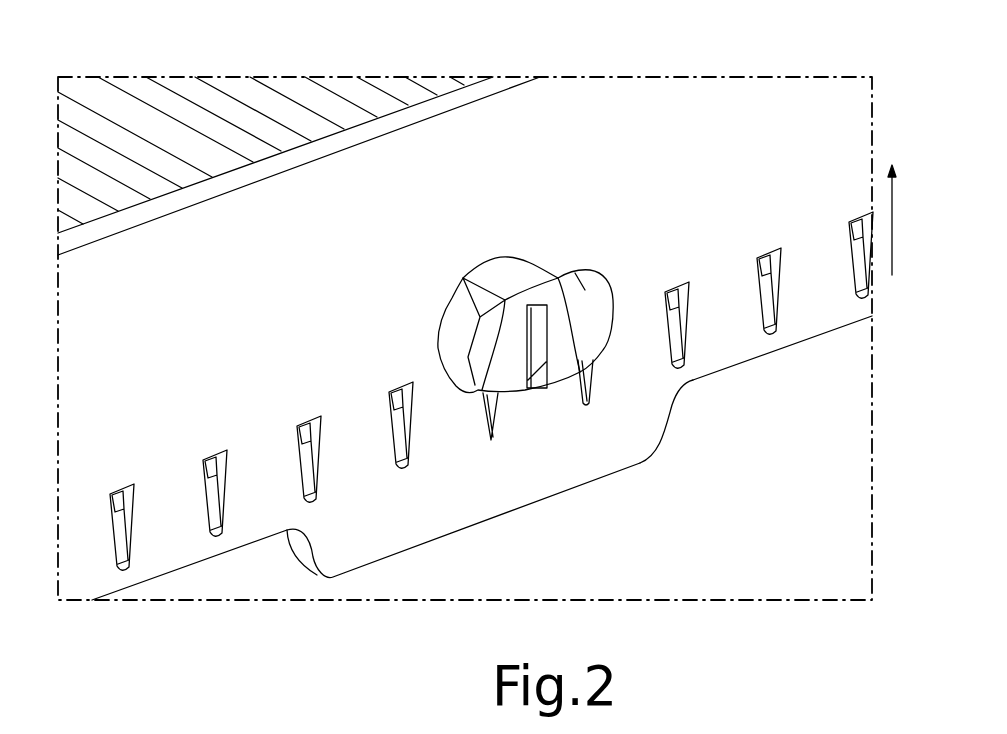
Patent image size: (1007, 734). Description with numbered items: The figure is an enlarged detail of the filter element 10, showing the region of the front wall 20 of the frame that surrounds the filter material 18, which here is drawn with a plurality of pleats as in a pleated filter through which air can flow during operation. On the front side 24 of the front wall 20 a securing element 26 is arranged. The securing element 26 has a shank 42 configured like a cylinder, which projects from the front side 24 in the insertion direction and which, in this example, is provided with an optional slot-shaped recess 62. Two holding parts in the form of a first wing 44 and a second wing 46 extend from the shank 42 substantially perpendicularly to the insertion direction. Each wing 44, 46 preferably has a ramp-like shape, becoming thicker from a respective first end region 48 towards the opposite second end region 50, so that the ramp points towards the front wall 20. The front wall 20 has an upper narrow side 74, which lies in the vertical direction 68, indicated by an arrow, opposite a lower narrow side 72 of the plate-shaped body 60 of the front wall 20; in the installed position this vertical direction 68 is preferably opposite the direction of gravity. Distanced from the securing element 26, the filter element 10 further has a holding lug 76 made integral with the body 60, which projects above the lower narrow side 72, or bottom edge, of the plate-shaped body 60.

The filter element 10 is at (708, 66).
The filter material 18 is at (267, 132).
The front wall 20 is at (818, 133).
The front side 24 is at (176, 464).
The securing element 26 is at (547, 250).
The shank 42 is at (492, 277).
The first wing 44 is at (595, 292).
The second wing 46 is at (447, 329).
The first end region 48 is at (584, 262).
The second end region 50 is at (465, 292).
The plate-shaped body 60 is at (815, 303).
The slot-shaped recess 62 is at (547, 388).
The vertical direction 68 is at (915, 220).
The lower narrow side 72 is at (745, 378).
The upper narrow side 74 is at (472, 92).
The holding lug 76 is at (432, 530).